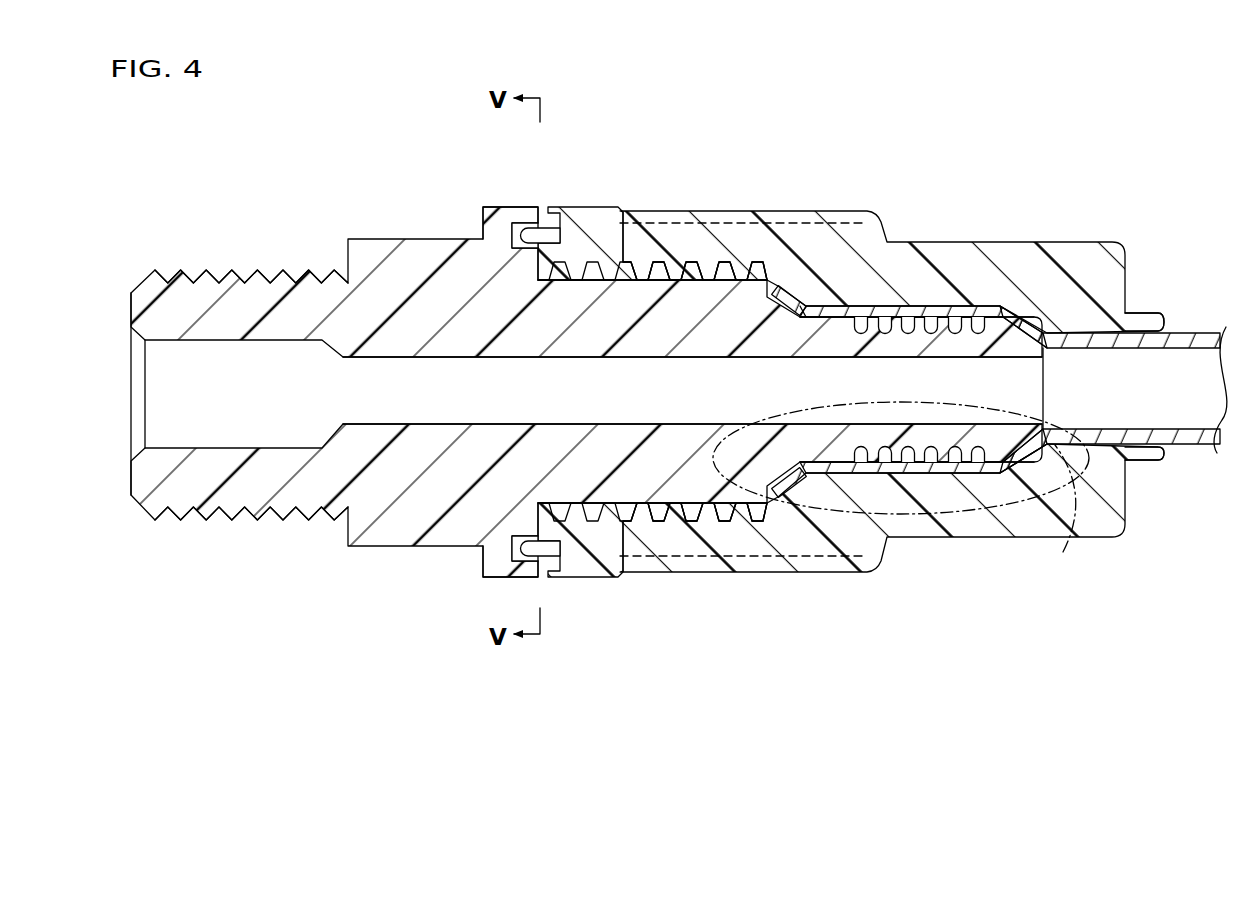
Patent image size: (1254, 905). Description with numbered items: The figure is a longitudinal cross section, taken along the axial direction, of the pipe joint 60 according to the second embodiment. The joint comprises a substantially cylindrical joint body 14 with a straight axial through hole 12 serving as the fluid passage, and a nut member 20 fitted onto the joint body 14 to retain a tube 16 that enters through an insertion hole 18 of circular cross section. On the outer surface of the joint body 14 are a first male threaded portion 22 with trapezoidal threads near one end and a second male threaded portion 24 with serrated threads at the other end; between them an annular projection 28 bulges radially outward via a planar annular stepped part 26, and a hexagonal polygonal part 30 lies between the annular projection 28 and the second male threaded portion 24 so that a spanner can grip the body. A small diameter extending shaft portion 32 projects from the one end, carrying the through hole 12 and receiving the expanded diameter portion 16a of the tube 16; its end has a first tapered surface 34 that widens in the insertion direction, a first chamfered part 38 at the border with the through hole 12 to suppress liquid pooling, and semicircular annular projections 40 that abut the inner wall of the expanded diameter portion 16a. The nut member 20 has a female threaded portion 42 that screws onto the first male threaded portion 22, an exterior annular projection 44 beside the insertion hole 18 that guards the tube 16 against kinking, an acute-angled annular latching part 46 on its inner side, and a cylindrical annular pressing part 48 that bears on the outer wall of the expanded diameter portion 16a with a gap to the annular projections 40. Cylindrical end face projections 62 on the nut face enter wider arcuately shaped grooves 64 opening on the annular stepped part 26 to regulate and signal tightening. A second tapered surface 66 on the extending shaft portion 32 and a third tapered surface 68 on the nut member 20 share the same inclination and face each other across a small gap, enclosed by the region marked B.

The through hole 12 is at (503, 402).
The joint body 14 is at (409, 229).
The tube 16 is at (1013, 338).
The expanded diameter portion 16a is at (959, 347).
The insertion hole 18 is at (1098, 338).
The nut member 20 is at (893, 218).
The first male threaded portion 22 is at (590, 283).
The second male threaded portion 24 is at (222, 268).
The annular stepped part 26 is at (662, 224).
The annular projection 28 is at (503, 214).
The polygonal part 30 is at (398, 549).
The extending shaft portion 32 is at (940, 306).
The first tapered surface 34 is at (1018, 322).
The first chamfered part 38 is at (1040, 430).
The annular projections 40 is at (893, 455).
The female threaded portion 42 is at (641, 268).
The annular projection 44 is at (1148, 460).
The annular latching part 46 is at (1066, 509).
The annular pressing part 48 is at (928, 468).
The pipe joint 60 is at (763, 325).
The end face projections 62 is at (553, 238).
The arcuately shaped grooves 64 is at (519, 226).
The second tapered surface 66 is at (768, 300).
The third tapered surface 68 is at (803, 300).
The detail region B is at (978, 405).